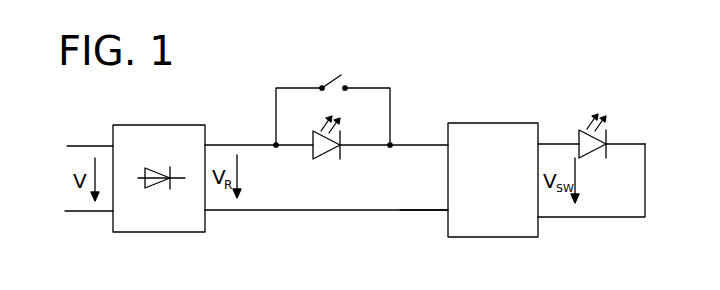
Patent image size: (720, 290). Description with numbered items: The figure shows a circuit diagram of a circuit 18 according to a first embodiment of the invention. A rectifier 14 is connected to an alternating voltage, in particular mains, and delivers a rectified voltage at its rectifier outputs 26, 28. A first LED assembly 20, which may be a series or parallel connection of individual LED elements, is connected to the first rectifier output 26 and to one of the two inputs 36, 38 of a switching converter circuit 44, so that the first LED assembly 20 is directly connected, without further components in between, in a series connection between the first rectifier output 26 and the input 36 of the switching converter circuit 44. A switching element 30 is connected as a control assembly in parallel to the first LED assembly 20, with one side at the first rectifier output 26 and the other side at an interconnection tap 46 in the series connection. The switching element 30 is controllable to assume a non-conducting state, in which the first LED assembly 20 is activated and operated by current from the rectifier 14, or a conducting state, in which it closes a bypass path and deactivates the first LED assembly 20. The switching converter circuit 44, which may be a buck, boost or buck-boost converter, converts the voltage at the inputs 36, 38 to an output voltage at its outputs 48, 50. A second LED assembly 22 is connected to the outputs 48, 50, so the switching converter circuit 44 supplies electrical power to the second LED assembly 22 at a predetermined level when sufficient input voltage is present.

The rectifier 14 is at (157, 125).
The circuit 18 is at (480, 69).
The first LED assembly 20 is at (325, 157).
The second LED assembly 22 is at (592, 155).
The first rectifier output 26 is at (223, 145).
The second rectifier output 28 is at (220, 210).
The switching element 30 is at (323, 85).
The first input of switching converter circuit 36 is at (447, 145).
The second input of switching converter circuit 38 is at (423, 211).
The switching converter circuit 44 is at (493, 180).
The interconnection tap 46 is at (392, 149).
The first output of switching converter circuit 48 is at (550, 143).
The second output of switching converter circuit 50 is at (550, 218).